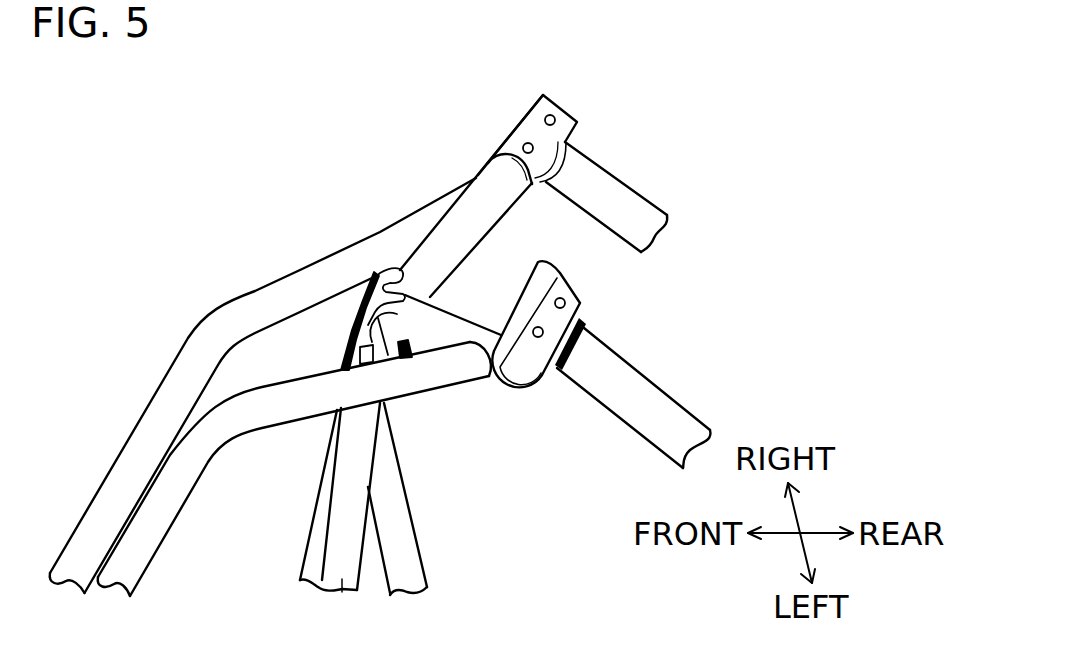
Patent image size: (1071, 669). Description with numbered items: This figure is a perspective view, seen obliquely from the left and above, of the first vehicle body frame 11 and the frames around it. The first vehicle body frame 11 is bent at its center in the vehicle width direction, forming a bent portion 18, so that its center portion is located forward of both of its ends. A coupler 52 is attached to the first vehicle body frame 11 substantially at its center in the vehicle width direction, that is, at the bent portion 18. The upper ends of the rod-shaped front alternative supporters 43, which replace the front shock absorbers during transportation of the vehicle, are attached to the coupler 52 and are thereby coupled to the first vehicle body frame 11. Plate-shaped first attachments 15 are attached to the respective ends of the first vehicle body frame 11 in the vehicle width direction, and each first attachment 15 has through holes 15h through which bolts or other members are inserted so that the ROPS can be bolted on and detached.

The first vehicle body frame 11 is at (486, 182).
The first attachment 15 is at (578, 121).
The through hole 15h is at (546, 118).
The bent portion 18 is at (408, 293).
The front alternative supporter 43 is at (311, 575).
The coupler 52 is at (350, 333).